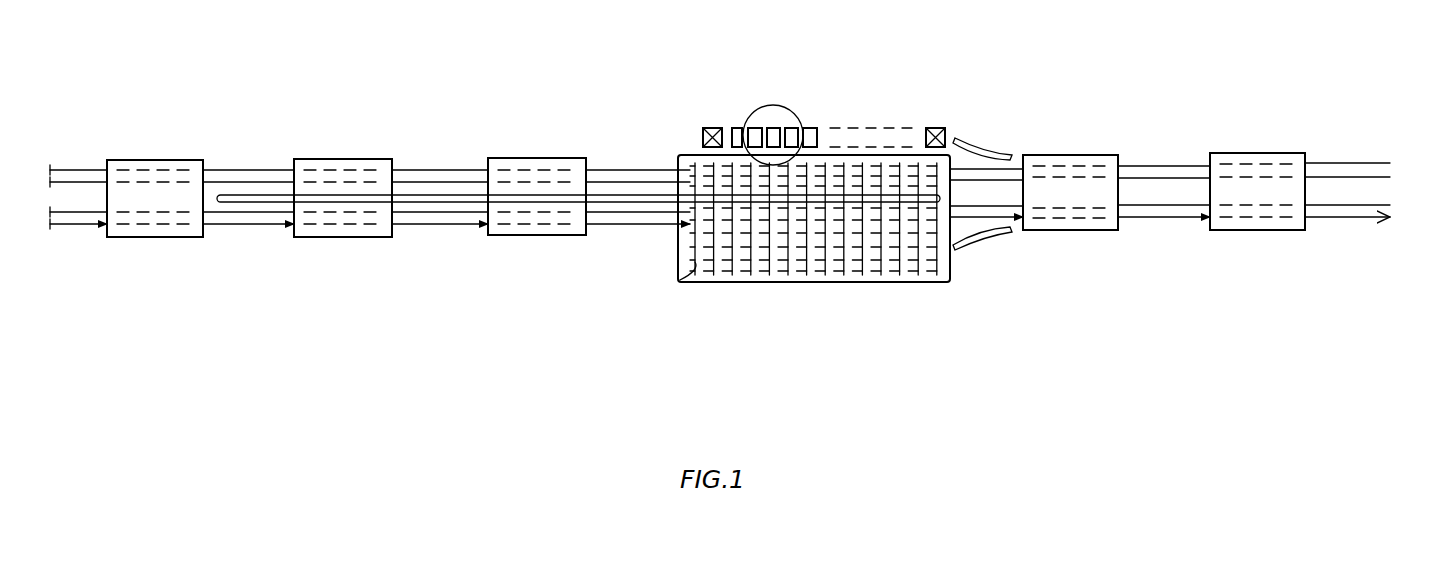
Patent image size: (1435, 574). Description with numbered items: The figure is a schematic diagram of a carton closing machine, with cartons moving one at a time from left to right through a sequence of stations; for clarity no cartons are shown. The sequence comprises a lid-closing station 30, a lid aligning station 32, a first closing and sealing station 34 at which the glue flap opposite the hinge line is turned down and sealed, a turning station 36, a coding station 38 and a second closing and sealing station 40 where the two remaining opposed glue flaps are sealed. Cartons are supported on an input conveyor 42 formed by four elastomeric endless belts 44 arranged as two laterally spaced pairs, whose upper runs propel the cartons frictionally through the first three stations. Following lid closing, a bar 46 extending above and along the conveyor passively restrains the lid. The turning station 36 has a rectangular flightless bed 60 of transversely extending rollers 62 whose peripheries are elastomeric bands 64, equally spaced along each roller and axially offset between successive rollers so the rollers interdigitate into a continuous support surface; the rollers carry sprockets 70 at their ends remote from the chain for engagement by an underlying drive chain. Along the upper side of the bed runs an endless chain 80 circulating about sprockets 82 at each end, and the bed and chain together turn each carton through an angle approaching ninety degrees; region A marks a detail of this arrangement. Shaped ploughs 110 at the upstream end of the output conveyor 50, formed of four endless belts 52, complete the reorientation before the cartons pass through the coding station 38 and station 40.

The lid-closing station 30 is at (157, 238).
The lid aligning station 32 is at (350, 238).
The first closing and sealing station 34 is at (538, 236).
The turning station 36 is at (812, 285).
The coding station 38 is at (1092, 234).
The second closing and sealing station 40 is at (1270, 232).
The input conveyor 42 is at (445, 160).
The endless belts 44 is at (257, 181).
The bar 46 is at (628, 200).
The output conveyor 50 is at (1335, 160).
The endless belts 52 is at (1172, 178).
The bed 60 is at (878, 283).
The rollers 62 is at (686, 278).
The bands 64 is at (778, 268).
The sprockets 70 is at (918, 270).
The endless chain 80 is at (832, 128).
The sprockets 82 is at (712, 128).
The shaped ploughs 110 is at (980, 145).
The detail region A is at (773, 104).